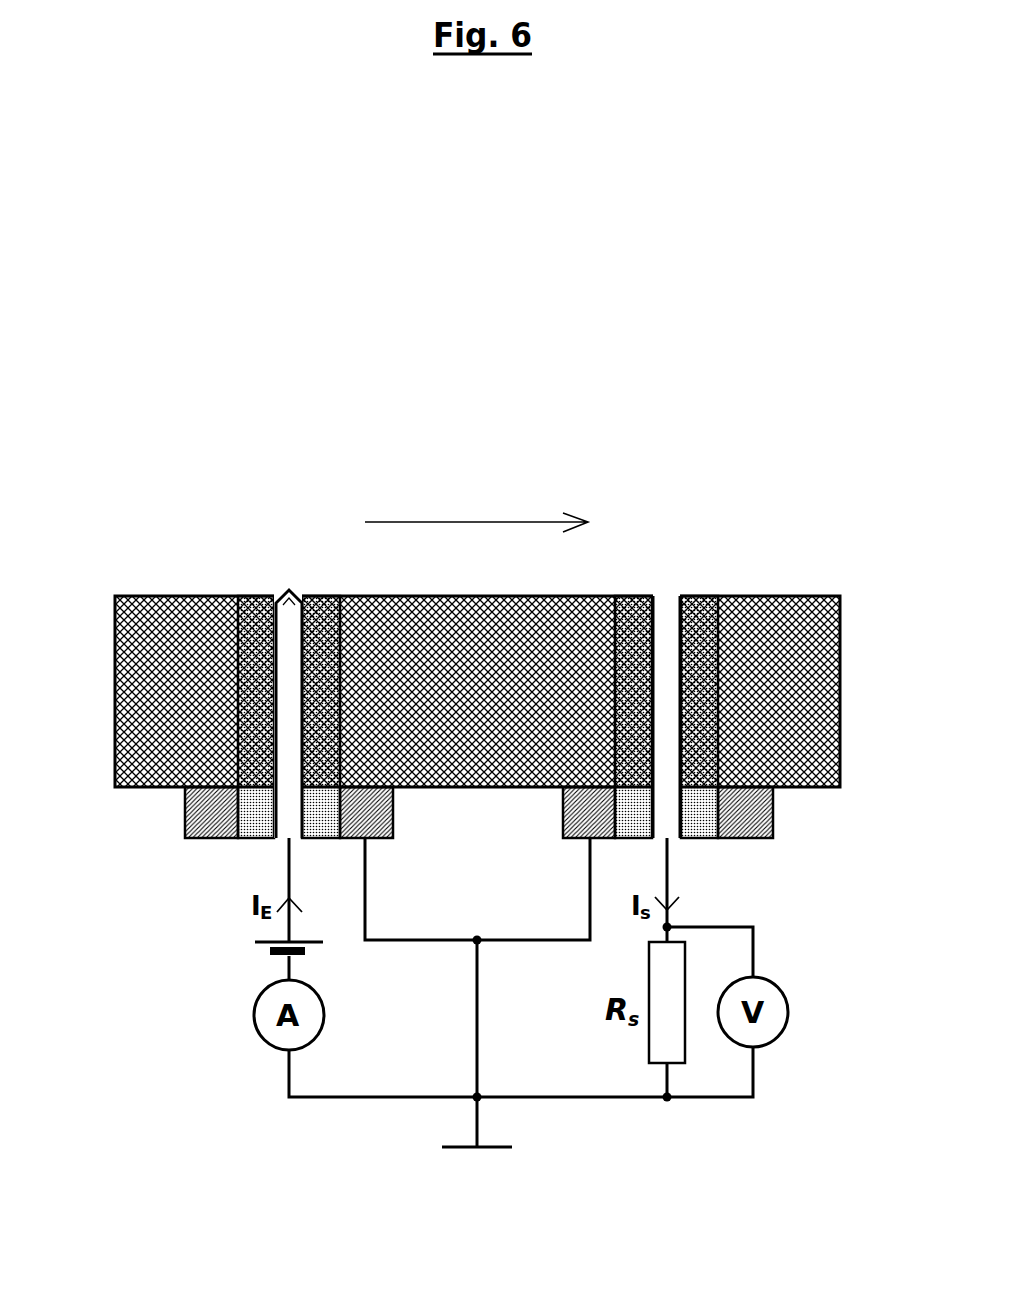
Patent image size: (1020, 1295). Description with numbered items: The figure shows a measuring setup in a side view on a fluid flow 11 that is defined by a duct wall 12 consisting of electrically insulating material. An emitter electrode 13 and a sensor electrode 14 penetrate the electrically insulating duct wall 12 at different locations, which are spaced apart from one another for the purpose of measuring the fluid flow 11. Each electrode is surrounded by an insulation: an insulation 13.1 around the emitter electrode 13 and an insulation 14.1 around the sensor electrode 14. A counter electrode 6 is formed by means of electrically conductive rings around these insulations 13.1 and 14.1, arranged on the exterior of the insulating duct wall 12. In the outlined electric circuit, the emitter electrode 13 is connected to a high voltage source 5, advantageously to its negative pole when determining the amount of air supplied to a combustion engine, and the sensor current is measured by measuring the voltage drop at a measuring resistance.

The high voltage source 5 is at (263, 950).
The counter electrode 6 is at (205, 814).
The fluid flow 11 is at (586, 560).
The electrically insulating duct wall 12 is at (145, 647).
The emitter electrode 13 is at (283, 597).
The insulation around the emitter electrode 13.1 is at (328, 600).
The sensor electrode 14 is at (667, 610).
The insulation around the sensor electrode 14.1 is at (750, 600).